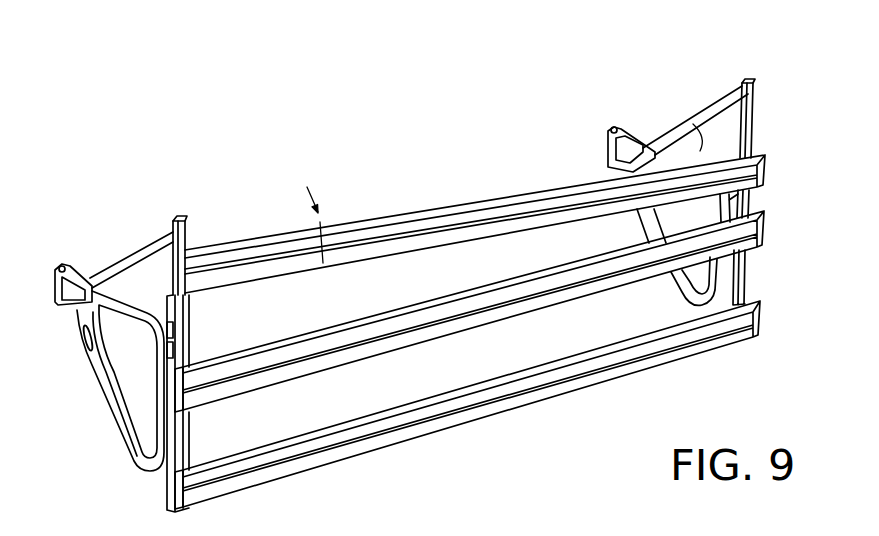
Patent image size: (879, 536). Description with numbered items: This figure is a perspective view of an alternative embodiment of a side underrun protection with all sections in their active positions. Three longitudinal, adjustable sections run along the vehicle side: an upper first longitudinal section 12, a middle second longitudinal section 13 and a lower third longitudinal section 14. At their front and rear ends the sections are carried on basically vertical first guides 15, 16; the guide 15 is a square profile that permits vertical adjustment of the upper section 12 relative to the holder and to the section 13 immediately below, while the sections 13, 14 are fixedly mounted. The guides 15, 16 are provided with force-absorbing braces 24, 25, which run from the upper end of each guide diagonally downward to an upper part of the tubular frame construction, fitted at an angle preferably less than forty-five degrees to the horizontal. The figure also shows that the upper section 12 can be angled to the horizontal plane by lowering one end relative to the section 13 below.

The upper first longitudinal section 12 is at (590, 197).
The middle second longitudinal section 13 is at (538, 283).
The third longitudinal section 14 is at (533, 397).
The first guide 15 is at (755, 120).
The first guide 16 is at (188, 232).
The force-absorbing brace 24 is at (136, 250).
The force-absorbing brace 25 is at (684, 123).